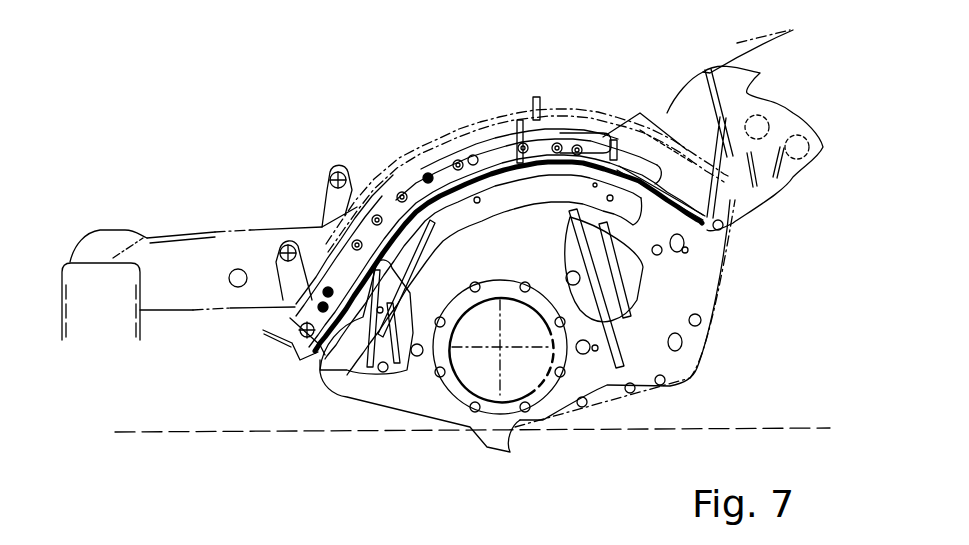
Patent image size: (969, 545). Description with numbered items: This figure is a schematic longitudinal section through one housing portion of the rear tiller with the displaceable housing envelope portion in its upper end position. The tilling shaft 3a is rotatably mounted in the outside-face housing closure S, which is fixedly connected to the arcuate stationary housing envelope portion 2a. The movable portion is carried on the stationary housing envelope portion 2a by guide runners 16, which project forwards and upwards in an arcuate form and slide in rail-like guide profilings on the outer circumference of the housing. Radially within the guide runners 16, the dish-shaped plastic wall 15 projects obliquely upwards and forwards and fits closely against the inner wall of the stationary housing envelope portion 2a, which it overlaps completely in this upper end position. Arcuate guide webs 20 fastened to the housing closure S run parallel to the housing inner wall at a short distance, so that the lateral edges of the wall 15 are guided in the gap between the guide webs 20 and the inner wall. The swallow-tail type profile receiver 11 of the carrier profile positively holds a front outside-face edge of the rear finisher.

The stationary housing envelope portion 2a is at (660, 176).
The guide runners 16 is at (412, 193).
The arcuate guide webs 20 is at (537, 192).
The wall 15 is at (647, 200).
The profile receiver 11 is at (307, 337).
The outside-face housing closure S is at (396, 382).
The tilling shaft 3a is at (538, 378).